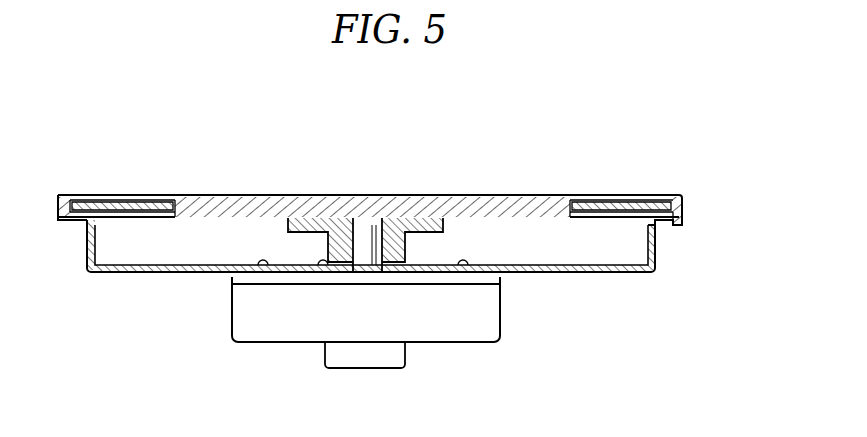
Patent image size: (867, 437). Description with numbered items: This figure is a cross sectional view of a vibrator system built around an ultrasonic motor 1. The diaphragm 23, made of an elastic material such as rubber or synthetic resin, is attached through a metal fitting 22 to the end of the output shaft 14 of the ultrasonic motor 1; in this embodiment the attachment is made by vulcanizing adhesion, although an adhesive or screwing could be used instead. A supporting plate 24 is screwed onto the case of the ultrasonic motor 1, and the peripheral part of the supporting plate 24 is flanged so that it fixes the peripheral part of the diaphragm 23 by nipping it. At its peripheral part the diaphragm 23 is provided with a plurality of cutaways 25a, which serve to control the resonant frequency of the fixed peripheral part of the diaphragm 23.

The ultrasonic motor 1 is at (238, 327).
The output shaft 14 is at (378, 195).
The metal fitting 22 is at (284, 195).
The diaphragm 23 is at (197, 194).
The supporting plate 24 is at (113, 276).
The cutaway 25a is at (122, 193).